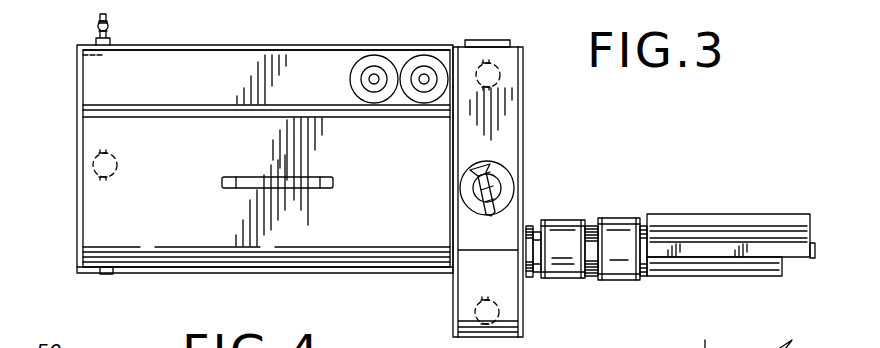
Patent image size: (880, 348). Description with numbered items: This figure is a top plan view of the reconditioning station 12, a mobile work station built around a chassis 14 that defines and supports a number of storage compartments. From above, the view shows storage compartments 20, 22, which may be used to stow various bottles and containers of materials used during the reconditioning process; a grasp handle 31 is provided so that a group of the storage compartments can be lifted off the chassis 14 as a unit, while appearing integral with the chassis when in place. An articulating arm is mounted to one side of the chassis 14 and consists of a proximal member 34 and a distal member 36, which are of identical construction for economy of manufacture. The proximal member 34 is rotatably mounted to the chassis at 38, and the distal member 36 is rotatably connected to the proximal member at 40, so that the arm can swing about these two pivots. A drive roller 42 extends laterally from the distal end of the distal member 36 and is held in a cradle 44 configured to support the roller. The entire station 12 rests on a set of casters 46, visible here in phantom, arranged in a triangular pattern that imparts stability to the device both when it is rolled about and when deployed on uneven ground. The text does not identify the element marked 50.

The reconditioning station 12 is at (621, 130).
The chassis 14 is at (525, 158).
The storage compartment 20 is at (505, 125).
The storage compartment 22 is at (220, 62).
The grasp handle 31 is at (303, 189).
The proximal member 34 is at (567, 220).
The distal member 36 is at (625, 221).
The rotatable mounting of proximal arm to chassis 38 is at (533, 278).
The rotatable connection of distal arm to proximal arm 40 is at (593, 278).
The drive roller 42 is at (743, 277).
The cradle 44 is at (772, 215).
The casters 46 is at (88, 168).
The finial knob 50 is at (97, 40).